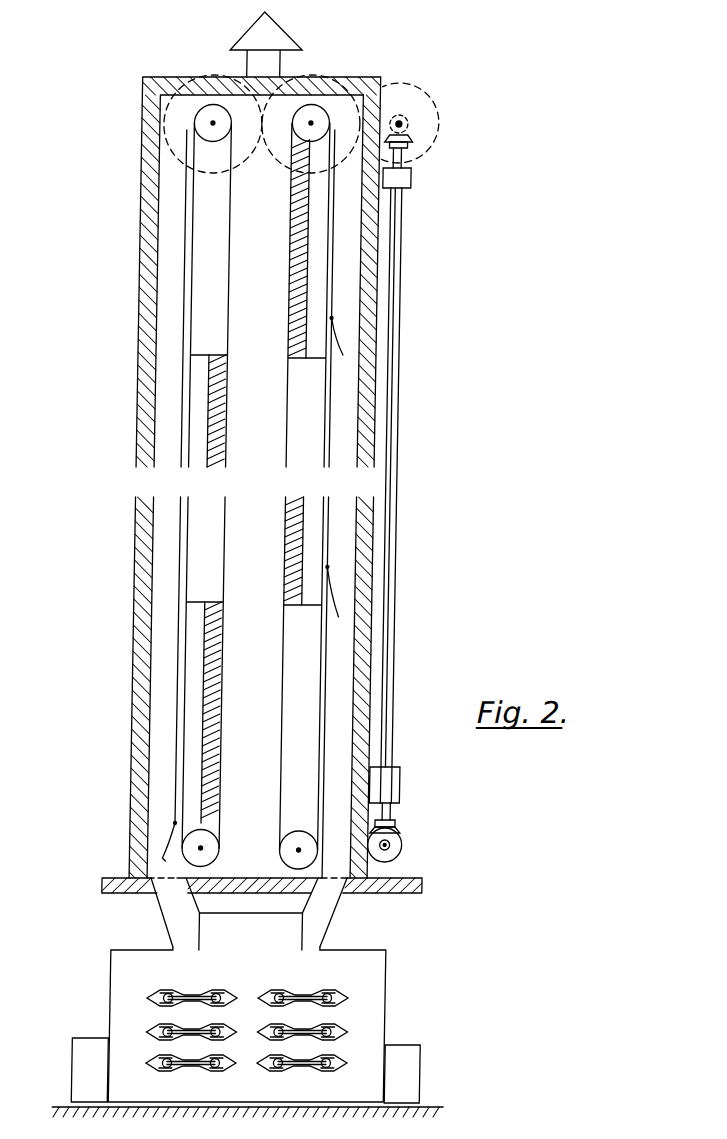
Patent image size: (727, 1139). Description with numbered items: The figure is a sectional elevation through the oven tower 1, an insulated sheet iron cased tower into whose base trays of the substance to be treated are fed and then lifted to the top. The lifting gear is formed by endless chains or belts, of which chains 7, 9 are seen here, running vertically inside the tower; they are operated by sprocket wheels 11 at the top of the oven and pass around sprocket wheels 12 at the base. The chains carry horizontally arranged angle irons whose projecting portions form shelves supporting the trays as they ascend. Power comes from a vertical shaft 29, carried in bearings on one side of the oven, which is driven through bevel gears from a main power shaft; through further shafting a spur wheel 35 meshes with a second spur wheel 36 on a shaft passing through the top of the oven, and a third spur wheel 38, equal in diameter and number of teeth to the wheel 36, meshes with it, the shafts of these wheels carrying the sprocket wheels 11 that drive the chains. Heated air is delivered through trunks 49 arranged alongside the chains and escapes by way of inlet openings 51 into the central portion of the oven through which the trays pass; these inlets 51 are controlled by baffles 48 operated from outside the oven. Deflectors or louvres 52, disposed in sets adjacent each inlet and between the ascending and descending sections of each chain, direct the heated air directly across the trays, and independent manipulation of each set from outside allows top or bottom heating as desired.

The oven tower 1 is at (149, 672).
The endless chain 7 is at (196, 412).
The endless chain 9 is at (333, 402).
The sprocket wheels 11 is at (215, 142).
The sprocket wheels 12 is at (304, 846).
The vertical shaft 29 is at (407, 523).
The spur wheel 35 is at (438, 113).
The spur wheel 36 is at (325, 77).
The spur wheel 38 is at (213, 76).
The baffles 48 is at (351, 343).
The trunks 49 is at (357, 685).
The inlet openings 51 is at (349, 617).
The louvres 52 is at (297, 547).